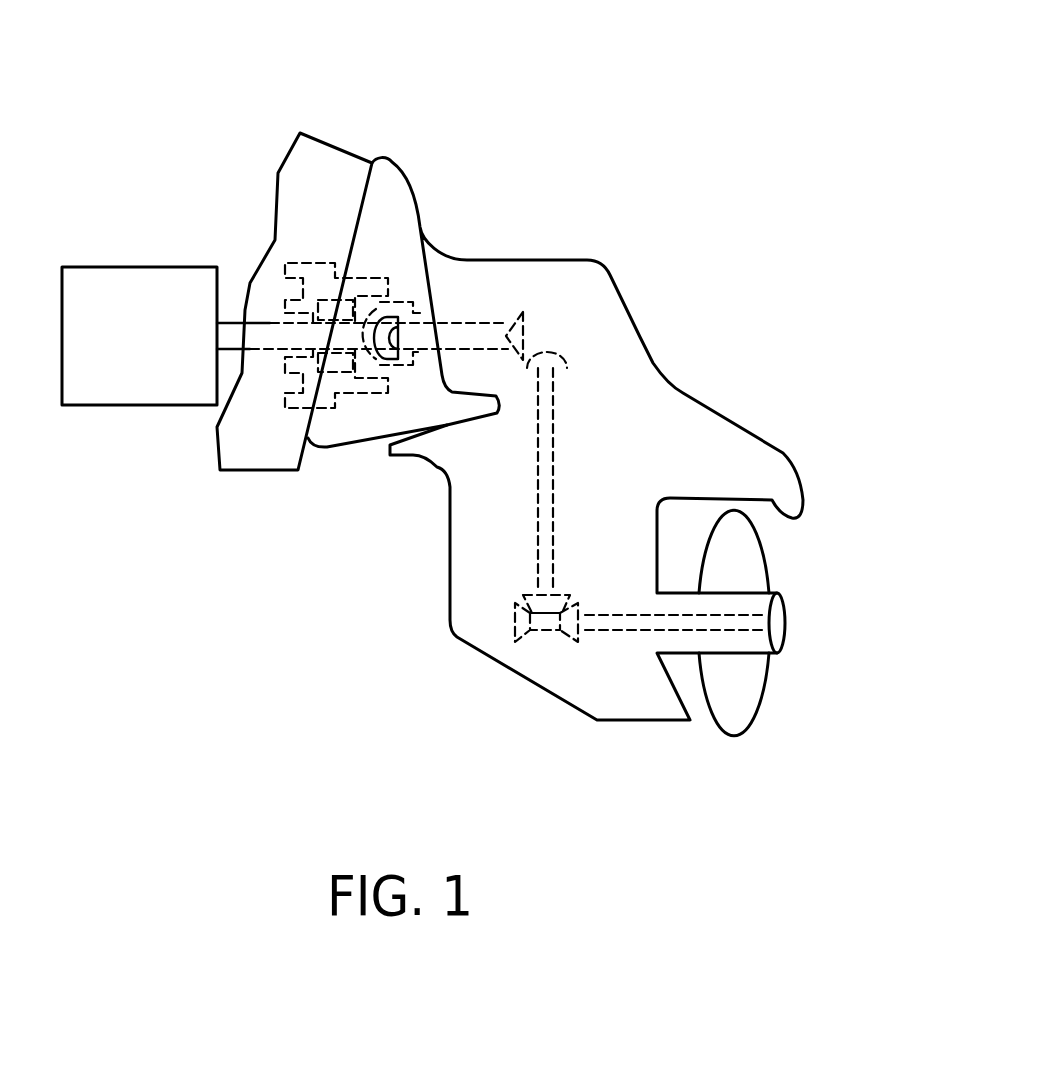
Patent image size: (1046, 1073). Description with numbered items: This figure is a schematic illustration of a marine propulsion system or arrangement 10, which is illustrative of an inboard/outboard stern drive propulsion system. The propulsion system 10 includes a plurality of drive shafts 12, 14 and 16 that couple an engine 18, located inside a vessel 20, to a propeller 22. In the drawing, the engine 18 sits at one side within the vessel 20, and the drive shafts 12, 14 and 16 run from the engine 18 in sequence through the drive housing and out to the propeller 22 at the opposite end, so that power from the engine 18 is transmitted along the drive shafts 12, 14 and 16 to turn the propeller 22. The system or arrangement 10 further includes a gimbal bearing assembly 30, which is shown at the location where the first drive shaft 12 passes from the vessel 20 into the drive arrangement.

The marine propulsion system 10 is at (662, 118).
The drive shaft 12 is at (270, 323).
The drive shaft 14 is at (550, 400).
The drive shaft 16 is at (613, 618).
The engine 18 is at (128, 297).
The vessel 20 is at (340, 147).
The propeller 22 is at (747, 572).
The gimbal bearing assembly 30 is at (356, 430).